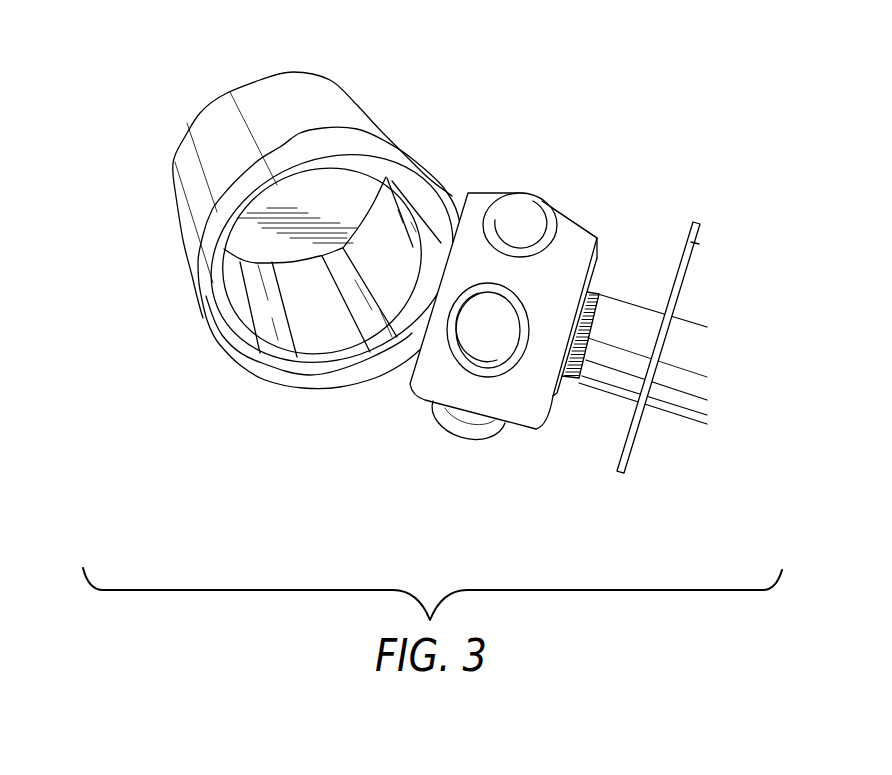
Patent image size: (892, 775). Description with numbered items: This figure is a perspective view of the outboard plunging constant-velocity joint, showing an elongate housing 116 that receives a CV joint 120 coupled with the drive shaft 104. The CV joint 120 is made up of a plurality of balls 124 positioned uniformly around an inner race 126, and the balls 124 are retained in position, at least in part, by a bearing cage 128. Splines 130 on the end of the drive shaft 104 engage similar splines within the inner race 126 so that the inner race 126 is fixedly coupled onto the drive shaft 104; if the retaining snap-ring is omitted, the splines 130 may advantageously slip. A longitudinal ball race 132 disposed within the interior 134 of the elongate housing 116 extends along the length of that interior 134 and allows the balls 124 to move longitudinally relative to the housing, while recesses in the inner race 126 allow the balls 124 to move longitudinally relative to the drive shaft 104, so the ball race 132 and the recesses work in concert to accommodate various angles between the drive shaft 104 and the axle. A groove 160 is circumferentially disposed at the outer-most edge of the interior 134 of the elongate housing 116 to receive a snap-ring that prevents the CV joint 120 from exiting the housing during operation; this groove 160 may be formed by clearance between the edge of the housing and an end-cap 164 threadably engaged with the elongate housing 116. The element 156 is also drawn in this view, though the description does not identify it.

The drive shaft 104 is at (687, 400).
The elongate housing 116 is at (192, 122).
The CV joint 120 is at (414, 440).
The balls 124 is at (503, 222).
The inner race 126 is at (553, 398).
The bearing cage 128 is at (572, 233).
The splines 130 is at (600, 292).
The longitudinal ball race 132 is at (266, 300).
The interior 134 is at (268, 213).
The plate 156 is at (700, 240).
The groove 160 is at (275, 356).
The end-cap 164 is at (337, 140).